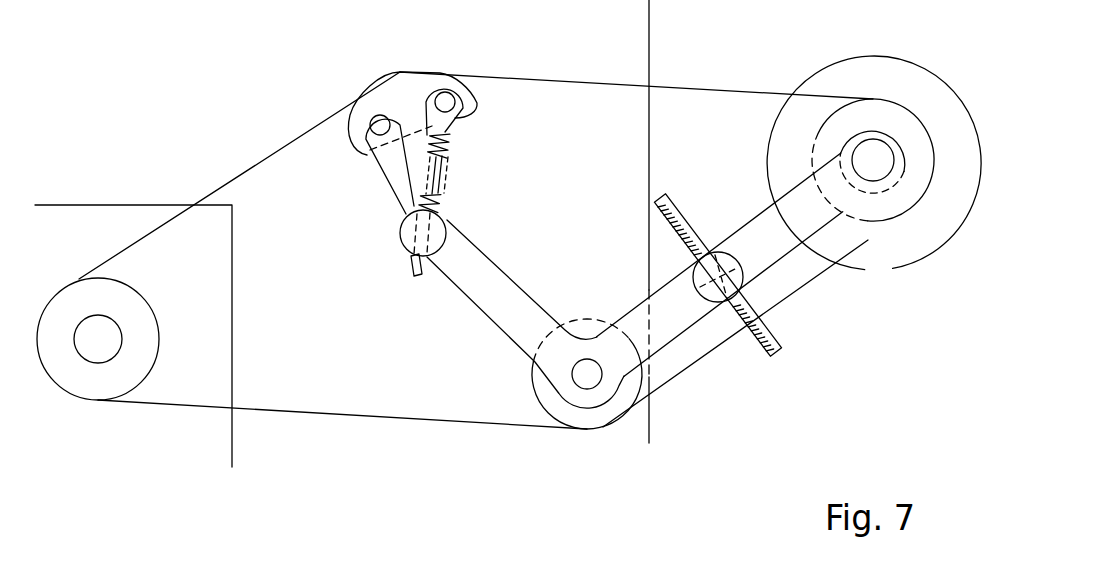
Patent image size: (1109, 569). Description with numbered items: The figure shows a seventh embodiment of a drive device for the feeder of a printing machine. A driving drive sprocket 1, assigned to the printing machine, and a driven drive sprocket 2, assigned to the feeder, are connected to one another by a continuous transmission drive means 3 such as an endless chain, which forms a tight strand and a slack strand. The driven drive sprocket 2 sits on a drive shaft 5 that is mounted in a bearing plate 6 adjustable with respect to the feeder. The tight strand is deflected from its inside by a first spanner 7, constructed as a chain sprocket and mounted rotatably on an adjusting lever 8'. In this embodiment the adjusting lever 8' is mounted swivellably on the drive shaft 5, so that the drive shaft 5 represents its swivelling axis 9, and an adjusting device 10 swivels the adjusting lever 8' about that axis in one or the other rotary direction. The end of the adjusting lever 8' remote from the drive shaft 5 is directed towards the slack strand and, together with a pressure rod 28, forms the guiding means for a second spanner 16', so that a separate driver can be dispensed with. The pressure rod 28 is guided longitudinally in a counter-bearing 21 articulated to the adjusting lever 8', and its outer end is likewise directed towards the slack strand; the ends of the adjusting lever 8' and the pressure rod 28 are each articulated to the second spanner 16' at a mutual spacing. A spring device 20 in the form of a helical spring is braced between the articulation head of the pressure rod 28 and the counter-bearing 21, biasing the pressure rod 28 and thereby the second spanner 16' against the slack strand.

The driving drive sprocket 1 is at (90, 387).
The driven drive sprocket 2 is at (918, 163).
The transmission drive means 3 is at (375, 420).
The drive shaft 5 is at (890, 109).
The bearing plate 6 is at (913, 255).
The first spanner 7 is at (600, 417).
The adjusting lever 8' is at (720, 264).
The swivelling axis 9 is at (870, 148).
The adjusting device 10 is at (783, 362).
The second spanner 16' is at (412, 83).
The spring device 20 is at (440, 200).
The counter-bearing 21 is at (410, 233).
The pressure rod 28 is at (418, 270).